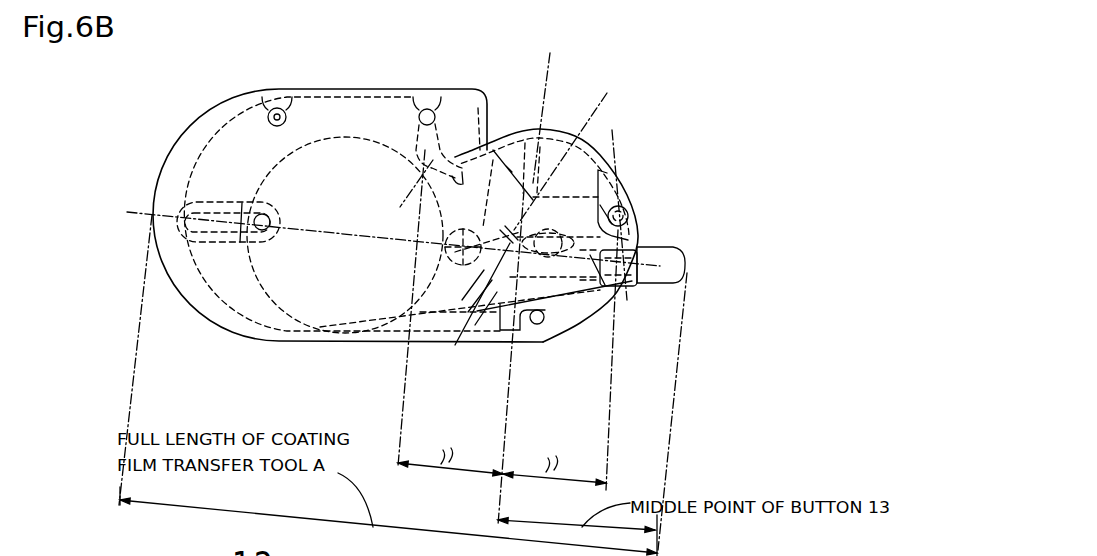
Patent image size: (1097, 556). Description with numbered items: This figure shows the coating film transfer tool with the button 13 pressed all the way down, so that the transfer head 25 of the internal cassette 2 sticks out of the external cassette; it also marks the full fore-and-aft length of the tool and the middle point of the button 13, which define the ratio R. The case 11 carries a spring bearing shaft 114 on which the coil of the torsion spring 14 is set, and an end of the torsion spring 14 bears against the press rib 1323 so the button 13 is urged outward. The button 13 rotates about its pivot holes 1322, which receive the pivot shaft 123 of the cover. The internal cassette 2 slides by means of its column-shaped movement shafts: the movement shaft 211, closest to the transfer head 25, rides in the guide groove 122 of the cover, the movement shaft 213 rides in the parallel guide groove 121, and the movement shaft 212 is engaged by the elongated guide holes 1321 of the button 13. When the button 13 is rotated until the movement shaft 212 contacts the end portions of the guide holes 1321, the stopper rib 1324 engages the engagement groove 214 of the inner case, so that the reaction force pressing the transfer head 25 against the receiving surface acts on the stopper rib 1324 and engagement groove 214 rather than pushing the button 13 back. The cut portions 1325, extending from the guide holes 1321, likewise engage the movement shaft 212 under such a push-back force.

The internal cassette 2 is at (293, 290).
The case 11 is at (265, 102).
The button 13 is at (543, 133).
The torsion spring 14 is at (538, 255).
The transfer head 25 is at (667, 270).
The spring bearing shaft 114 is at (660, 268).
The guide groove 121 is at (188, 225).
The guide groove 122 is at (613, 250).
The pivot shaft 123 is at (621, 219).
The movement shaft 211 is at (628, 360).
The movement shaft 212 is at (501, 243).
The movement shaft 213 is at (268, 215).
The engagement groove 214 is at (468, 180).
The guide hole 1321 is at (455, 250).
The pivot hole 1322 is at (620, 214).
The press rib 1323 is at (530, 210).
The stopper rib 1324 is at (457, 183).
The cut portion 1325 is at (520, 250).